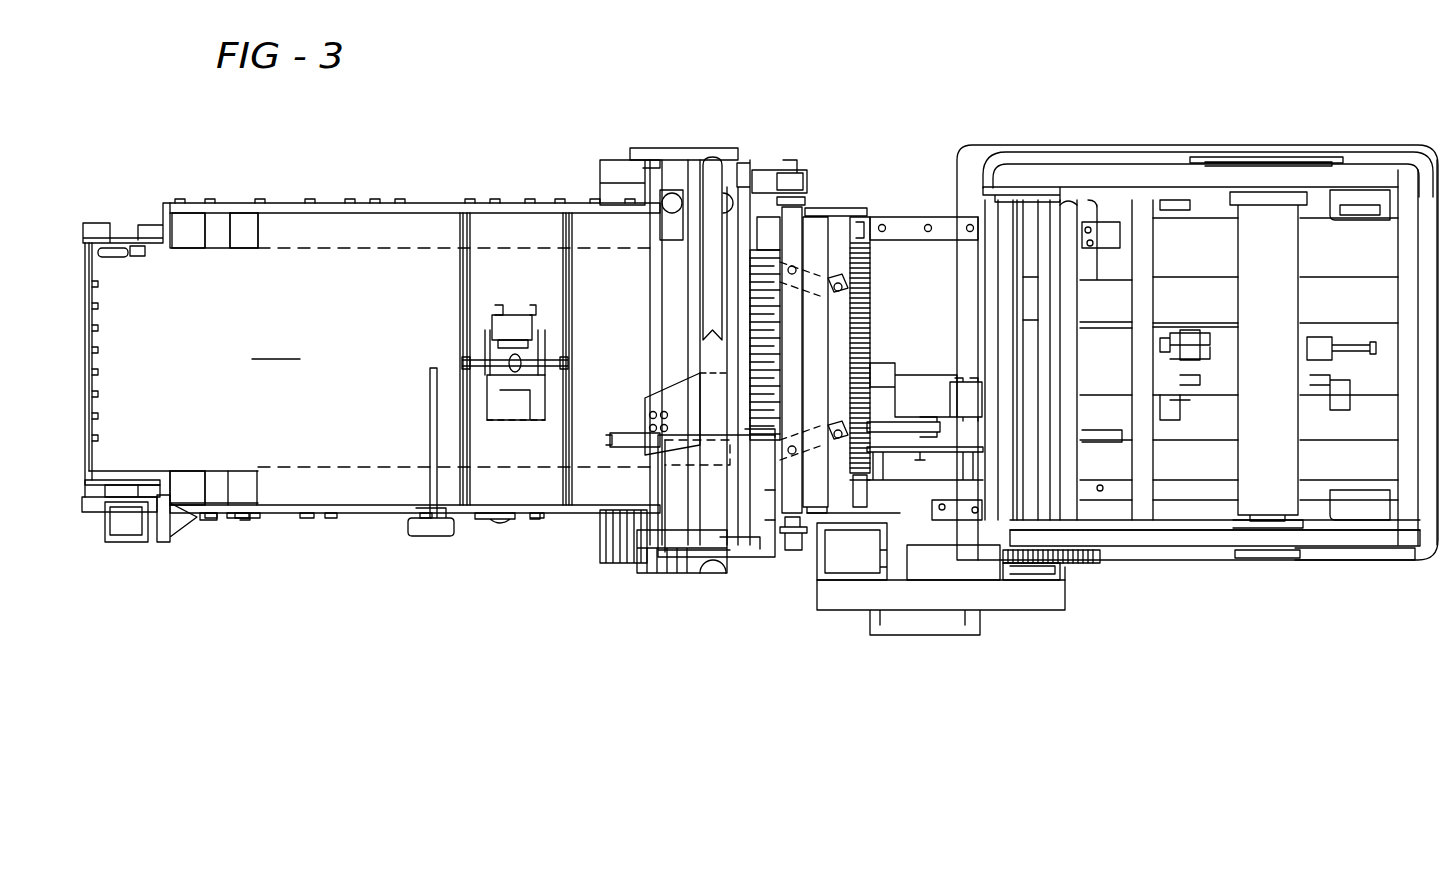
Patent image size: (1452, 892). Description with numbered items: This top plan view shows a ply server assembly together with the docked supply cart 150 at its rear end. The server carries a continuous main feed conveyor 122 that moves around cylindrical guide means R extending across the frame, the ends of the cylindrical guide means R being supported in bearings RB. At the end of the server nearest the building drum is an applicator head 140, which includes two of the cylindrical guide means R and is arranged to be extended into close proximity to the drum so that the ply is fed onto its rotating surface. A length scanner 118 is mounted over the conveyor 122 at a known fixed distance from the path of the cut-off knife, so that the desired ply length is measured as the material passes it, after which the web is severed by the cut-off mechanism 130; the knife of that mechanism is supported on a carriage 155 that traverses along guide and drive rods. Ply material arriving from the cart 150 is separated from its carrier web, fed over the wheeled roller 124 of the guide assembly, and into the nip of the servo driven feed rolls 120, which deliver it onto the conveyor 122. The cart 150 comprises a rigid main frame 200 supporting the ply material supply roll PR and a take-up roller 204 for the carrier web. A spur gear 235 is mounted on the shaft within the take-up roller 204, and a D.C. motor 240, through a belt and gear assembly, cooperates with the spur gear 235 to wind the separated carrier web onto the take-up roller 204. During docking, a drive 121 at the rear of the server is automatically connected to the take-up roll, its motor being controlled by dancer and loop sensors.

The main feed conveyor belt 122 is at (371, 370).
The cylindrical guide means R is at (193, 223).
The bearings RB is at (240, 515).
The applicator head 140 is at (90, 521).
The detector (length scanner) 118 is at (430, 400).
The knife carriage 155 is at (660, 400).
The cut-off mechanism 130 is at (685, 275).
The servo driven feed rolls 120 is at (820, 193).
The wheeled roller 124 is at (870, 311).
The D.C. motor 240 is at (835, 545).
The drive 121 is at (870, 593).
The take-up roller 204 is at (1045, 583).
The spur gear 235 is at (1093, 573).
The rigid main frame 200 is at (1065, 175).
The ply material supply roll PR is at (1264, 245).
The cart 150 is at (1230, 533).